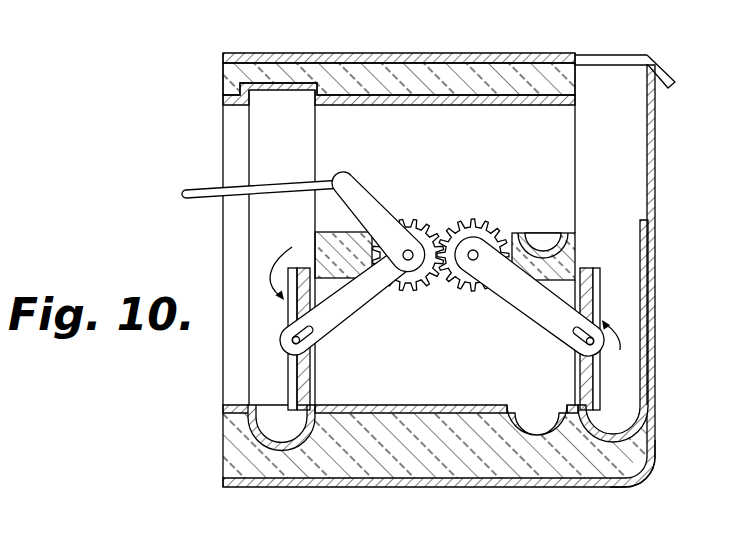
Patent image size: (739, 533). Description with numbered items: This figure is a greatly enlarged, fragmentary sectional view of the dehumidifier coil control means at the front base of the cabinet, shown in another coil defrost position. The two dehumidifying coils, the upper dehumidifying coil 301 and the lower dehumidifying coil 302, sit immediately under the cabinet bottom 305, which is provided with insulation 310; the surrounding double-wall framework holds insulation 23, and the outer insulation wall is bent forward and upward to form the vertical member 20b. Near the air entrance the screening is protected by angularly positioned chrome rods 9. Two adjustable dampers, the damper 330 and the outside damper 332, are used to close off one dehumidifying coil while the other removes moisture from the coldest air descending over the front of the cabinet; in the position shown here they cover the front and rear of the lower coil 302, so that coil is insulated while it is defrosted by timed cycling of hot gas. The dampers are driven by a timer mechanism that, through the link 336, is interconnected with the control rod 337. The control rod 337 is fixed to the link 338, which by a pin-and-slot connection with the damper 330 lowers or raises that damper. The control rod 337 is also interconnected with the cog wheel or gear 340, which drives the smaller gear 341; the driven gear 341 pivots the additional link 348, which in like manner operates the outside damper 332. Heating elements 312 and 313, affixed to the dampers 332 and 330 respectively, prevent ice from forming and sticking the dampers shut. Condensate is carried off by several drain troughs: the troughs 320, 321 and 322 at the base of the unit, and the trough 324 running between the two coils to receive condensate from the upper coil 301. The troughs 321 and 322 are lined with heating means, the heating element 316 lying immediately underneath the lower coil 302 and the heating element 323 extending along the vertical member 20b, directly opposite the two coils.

The chrome rods 9 is at (663, 73).
The vertical member of outer insulation wall 20b is at (657, 325).
The insulation 23 is at (414, 462).
The upper dehumidifying coil 301 is at (479, 154).
The lower dehumidifying coil 302 is at (462, 366).
The cabinet bottom 305 is at (442, 52).
The insulation 310 is at (372, 77).
The heating element 312 is at (584, 268).
The heating element 313 is at (297, 374).
The heating element 316 is at (426, 405).
The drain trough 320 is at (283, 452).
The drain trough 321 is at (533, 437).
The drain trough 322 is at (633, 470).
The liner wall 323 is at (641, 222).
The drain trough 324 is at (546, 243).
The adjustable damper 330 is at (280, 263).
The adjustable damper 332 is at (621, 351).
The link 336 is at (192, 187).
The control rod 337 is at (372, 211).
The link 338 is at (332, 324).
The cog wheel or gear 340 is at (425, 290).
The cog wheel or gear 341 is at (462, 290).
The link 348 is at (558, 326).